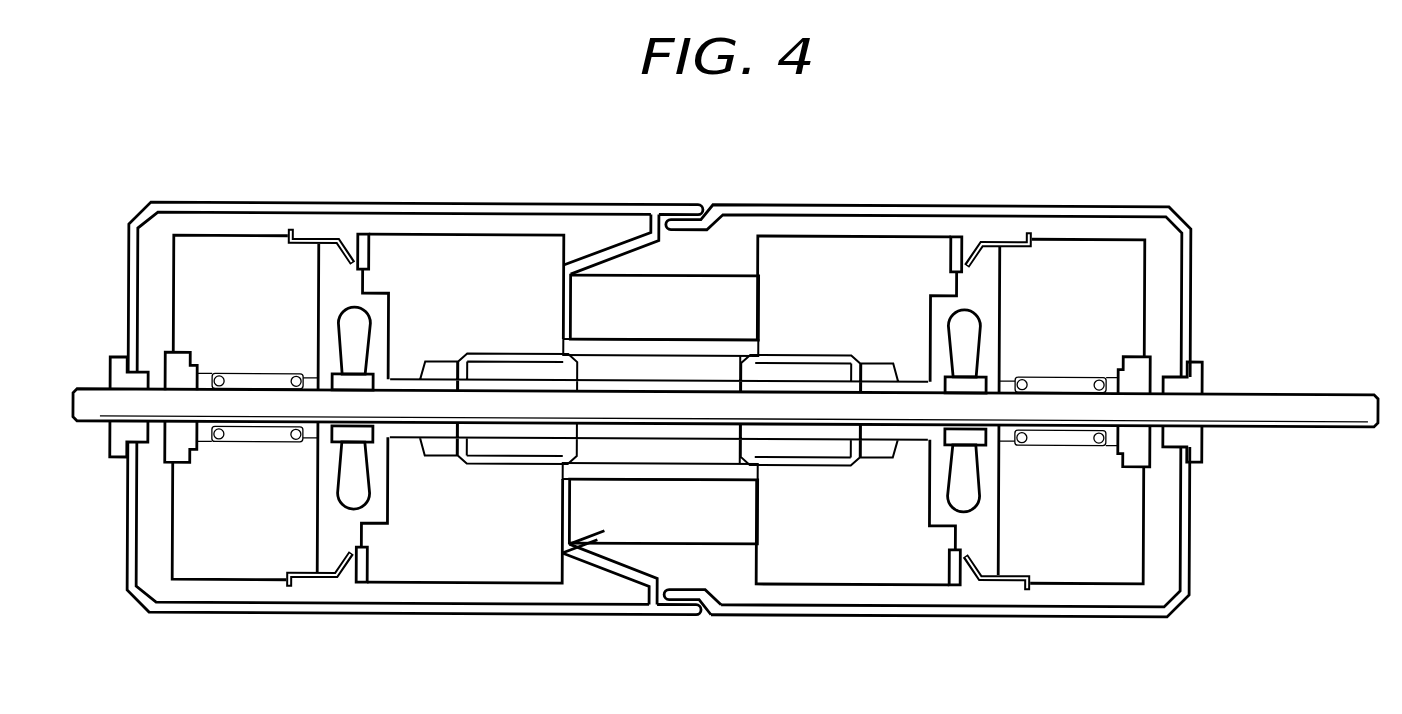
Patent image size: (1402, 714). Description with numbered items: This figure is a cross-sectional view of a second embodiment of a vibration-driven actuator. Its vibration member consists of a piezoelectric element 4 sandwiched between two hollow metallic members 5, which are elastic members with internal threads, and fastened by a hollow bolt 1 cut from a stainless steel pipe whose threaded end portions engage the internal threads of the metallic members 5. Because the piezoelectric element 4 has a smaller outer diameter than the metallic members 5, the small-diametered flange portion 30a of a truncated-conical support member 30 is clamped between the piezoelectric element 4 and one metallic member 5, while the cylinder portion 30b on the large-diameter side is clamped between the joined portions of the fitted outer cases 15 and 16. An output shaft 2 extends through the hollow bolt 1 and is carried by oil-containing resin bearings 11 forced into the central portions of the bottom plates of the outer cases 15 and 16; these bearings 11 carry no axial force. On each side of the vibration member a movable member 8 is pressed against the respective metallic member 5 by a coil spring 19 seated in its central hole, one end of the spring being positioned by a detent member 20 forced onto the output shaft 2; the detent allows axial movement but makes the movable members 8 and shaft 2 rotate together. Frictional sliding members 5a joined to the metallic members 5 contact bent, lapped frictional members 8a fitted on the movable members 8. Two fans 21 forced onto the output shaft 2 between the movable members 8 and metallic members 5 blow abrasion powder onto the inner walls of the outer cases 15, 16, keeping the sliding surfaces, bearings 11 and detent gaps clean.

The hollow bolt 1 is at (800, 455).
The output shaft 2 is at (1310, 412).
The piezoelectric element 4 is at (733, 290).
The metallic member 5 is at (524, 250).
The frictional sliding member 5a is at (364, 233).
The movable member 8 is at (243, 245).
The frictional member 8a is at (331, 236).
The bearing 11 is at (112, 437).
The outer case 15 is at (1070, 612).
The outer case 16 is at (460, 612).
The coil spring 19 is at (248, 440).
The detent member 20 is at (165, 360).
The fan 21 is at (355, 495).
The support member 30 is at (614, 582).
The small-diametered flange portion 30a is at (568, 527).
The cylinder portion 30b is at (680, 608).